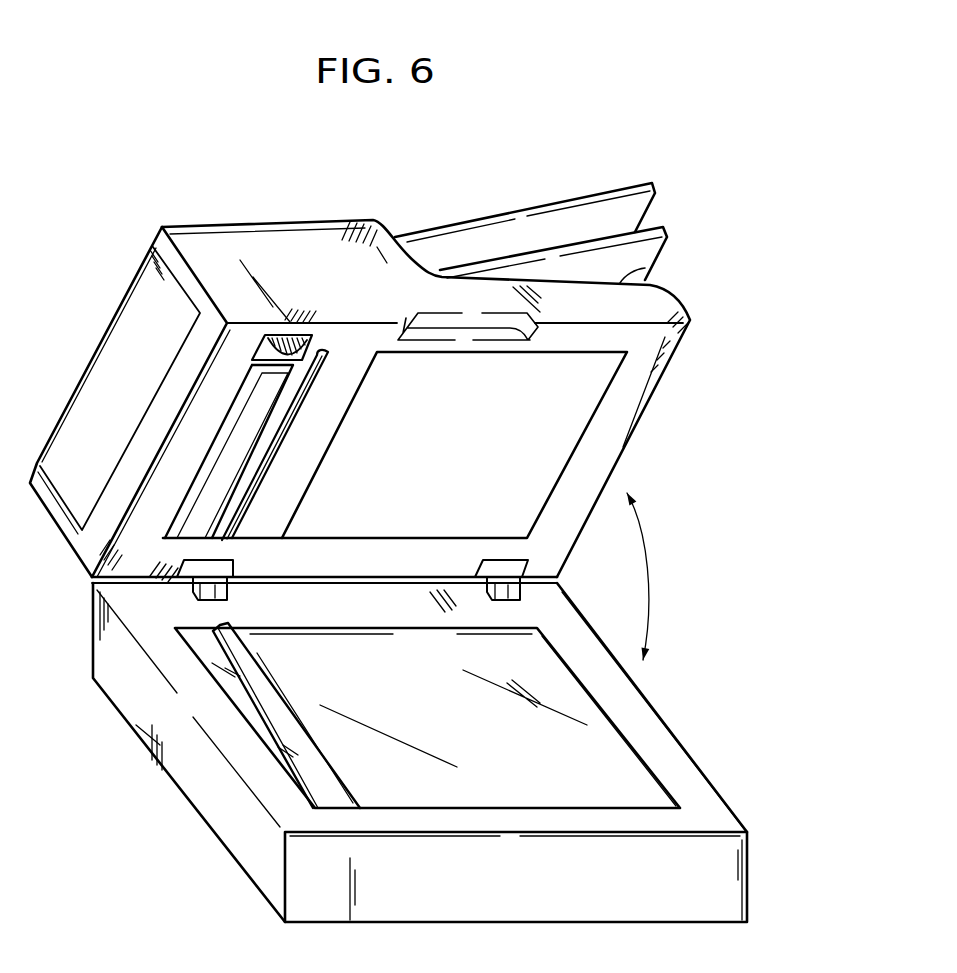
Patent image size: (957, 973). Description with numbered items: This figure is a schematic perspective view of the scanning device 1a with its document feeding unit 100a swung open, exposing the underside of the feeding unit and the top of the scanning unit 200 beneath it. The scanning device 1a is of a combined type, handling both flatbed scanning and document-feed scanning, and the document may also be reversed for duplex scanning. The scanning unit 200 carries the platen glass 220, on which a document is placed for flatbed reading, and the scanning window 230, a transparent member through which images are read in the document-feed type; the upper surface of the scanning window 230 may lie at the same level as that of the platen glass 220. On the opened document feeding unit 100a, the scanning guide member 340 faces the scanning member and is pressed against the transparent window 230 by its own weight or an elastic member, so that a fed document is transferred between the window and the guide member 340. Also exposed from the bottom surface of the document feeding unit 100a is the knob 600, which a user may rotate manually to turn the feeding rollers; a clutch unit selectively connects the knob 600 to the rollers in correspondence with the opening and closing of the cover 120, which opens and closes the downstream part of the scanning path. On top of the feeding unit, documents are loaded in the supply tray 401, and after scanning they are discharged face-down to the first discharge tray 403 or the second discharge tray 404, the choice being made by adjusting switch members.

The scanning device 1a is at (693, 535).
The document feeding unit 100a is at (262, 216).
The cover 120 is at (312, 435).
The scanning unit 200 is at (177, 782).
The platen glass 220 is at (560, 718).
The scanning window 230 is at (312, 783).
The scanning guide member 340 is at (228, 463).
The supply tray 401 is at (547, 202).
The first discharge tray 403 is at (592, 238).
The second discharge tray 404 is at (650, 267).
The knob 600 is at (290, 355).